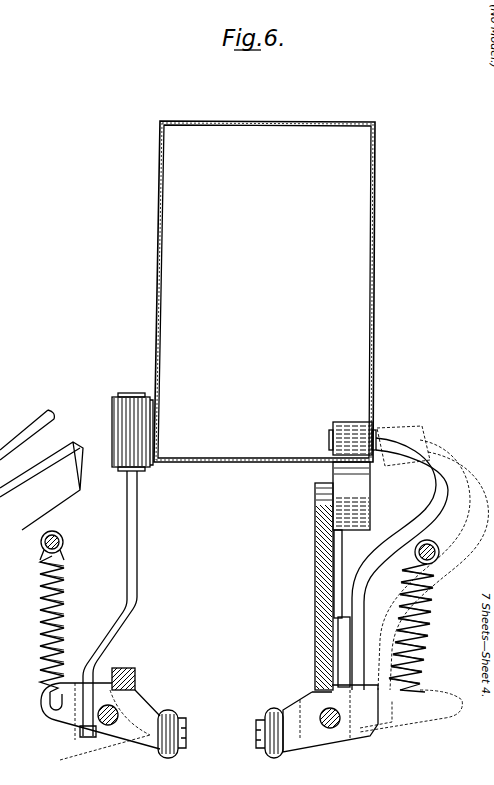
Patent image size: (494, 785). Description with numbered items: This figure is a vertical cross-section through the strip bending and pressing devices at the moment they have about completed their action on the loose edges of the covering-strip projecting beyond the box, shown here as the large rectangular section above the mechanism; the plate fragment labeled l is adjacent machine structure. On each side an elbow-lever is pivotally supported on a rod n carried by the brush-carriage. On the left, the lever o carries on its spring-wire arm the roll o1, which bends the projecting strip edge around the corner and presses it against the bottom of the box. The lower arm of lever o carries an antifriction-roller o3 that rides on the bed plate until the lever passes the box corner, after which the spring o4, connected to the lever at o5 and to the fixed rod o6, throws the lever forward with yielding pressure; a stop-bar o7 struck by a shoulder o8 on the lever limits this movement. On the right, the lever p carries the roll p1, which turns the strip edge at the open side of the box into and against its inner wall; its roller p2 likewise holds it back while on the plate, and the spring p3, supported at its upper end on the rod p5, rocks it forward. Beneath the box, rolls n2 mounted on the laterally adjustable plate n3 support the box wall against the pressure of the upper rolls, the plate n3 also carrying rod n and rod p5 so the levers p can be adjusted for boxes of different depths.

The plate l is at (41, 472).
The elbow-lever o is at (120, 640).
The roll o1 is at (122, 424).
The antifriction-roller o3 is at (170, 718).
The spring o4 is at (64, 624).
The spring connection o5 is at (42, 703).
The fixed rod o6 is at (65, 542).
The stop-bar o7 is at (135, 670).
The shoulder o8 is at (135, 681).
The rod n is at (107, 726).
The roll n2 is at (370, 500).
The plate n3 is at (315, 568).
The elbow-lever p is at (356, 652).
The roll p1 is at (348, 433).
The roller p2 is at (273, 718).
The spring p3 is at (422, 618).
The rod p5 is at (440, 552).